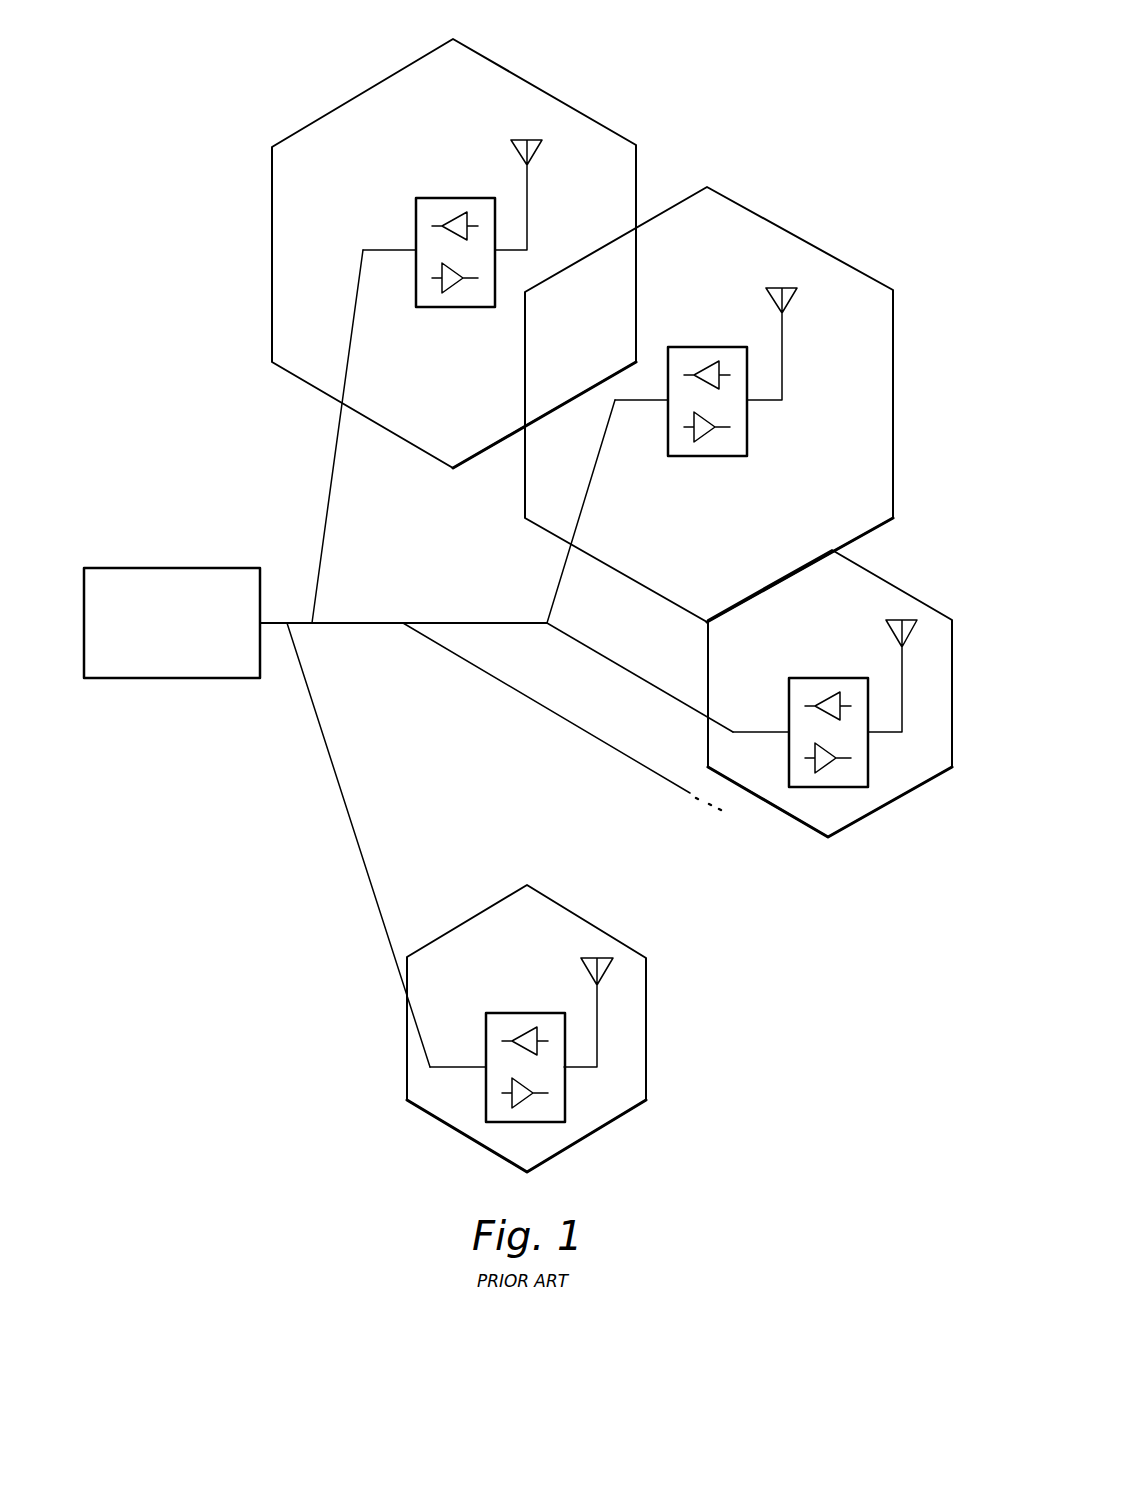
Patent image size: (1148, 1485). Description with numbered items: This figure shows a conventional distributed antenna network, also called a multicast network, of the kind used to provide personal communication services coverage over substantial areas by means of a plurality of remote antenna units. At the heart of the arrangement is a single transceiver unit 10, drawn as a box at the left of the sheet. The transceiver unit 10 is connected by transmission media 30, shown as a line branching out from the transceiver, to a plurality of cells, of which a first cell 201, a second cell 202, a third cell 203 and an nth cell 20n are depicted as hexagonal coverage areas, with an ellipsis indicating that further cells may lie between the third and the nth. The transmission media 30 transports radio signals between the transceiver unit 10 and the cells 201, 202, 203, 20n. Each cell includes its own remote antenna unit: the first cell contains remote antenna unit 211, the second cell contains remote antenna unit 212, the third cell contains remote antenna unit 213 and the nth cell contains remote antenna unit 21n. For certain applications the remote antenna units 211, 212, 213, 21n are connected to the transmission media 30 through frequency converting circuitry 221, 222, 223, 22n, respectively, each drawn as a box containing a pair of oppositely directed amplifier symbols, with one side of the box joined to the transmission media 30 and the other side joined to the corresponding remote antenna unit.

The transceiver unit 10 is at (170, 680).
The transmission media 30 is at (362, 625).
The cell 201 is at (360, 93).
The remote antenna unit 211 is at (532, 140).
The frequency converting circuitry 221 is at (457, 198).
The cell 202 is at (750, 210).
The remote antenna unit 212 is at (782, 288).
The frequency converting circuitry 222 is at (705, 347).
The cell 203 is at (888, 803).
The remote antenna unit 213 is at (905, 620).
The frequency converting circuitry 223 is at (829, 678).
The cell 20n is at (647, 1030).
The remote antenna unit 21n is at (598, 958).
The frequency converting circuitry 22n is at (525, 1013).